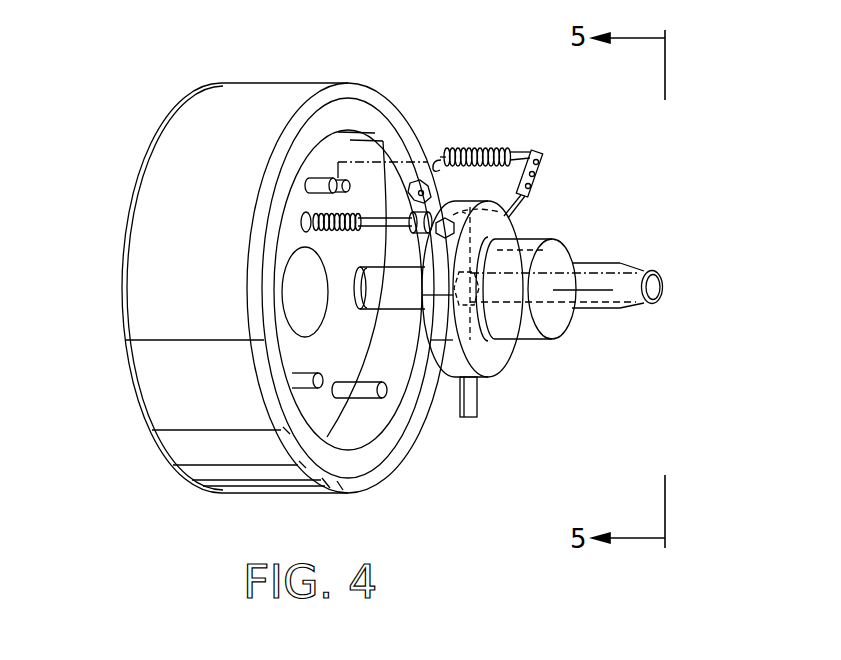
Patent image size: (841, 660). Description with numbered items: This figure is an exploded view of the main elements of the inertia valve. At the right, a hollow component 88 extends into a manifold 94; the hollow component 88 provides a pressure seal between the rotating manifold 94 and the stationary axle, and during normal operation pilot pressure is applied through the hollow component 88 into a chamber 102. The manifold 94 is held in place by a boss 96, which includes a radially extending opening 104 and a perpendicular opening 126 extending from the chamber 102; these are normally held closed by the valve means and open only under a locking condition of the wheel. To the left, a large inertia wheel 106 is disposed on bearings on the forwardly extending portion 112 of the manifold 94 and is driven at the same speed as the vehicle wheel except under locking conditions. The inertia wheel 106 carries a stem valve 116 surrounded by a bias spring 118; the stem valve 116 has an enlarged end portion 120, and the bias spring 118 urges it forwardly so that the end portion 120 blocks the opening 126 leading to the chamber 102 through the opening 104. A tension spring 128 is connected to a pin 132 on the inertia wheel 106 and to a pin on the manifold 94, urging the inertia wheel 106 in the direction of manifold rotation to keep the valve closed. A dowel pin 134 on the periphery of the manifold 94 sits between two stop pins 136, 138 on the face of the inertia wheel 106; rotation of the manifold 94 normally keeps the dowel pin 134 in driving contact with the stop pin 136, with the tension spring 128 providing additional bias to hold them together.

The hollow component 88 is at (600, 298).
The manifold 94 is at (603, 250).
The boss 96 is at (503, 350).
The chamber 102 is at (548, 242).
The radially extending opening 104 is at (512, 228).
The inertia wheel 106 is at (138, 350).
The forwardly extending portion 112 is at (402, 290).
The stem valve 116 is at (384, 215).
The bias spring 118 is at (339, 229).
The enlarged end portion 120 is at (413, 232).
The perpendicular opening 126 is at (462, 212).
The tension spring 128 is at (468, 150).
The pin 132 is at (313, 181).
The dowel pin 134 is at (479, 403).
The stop pin 136 is at (316, 361).
The stop pin 138 is at (369, 388).